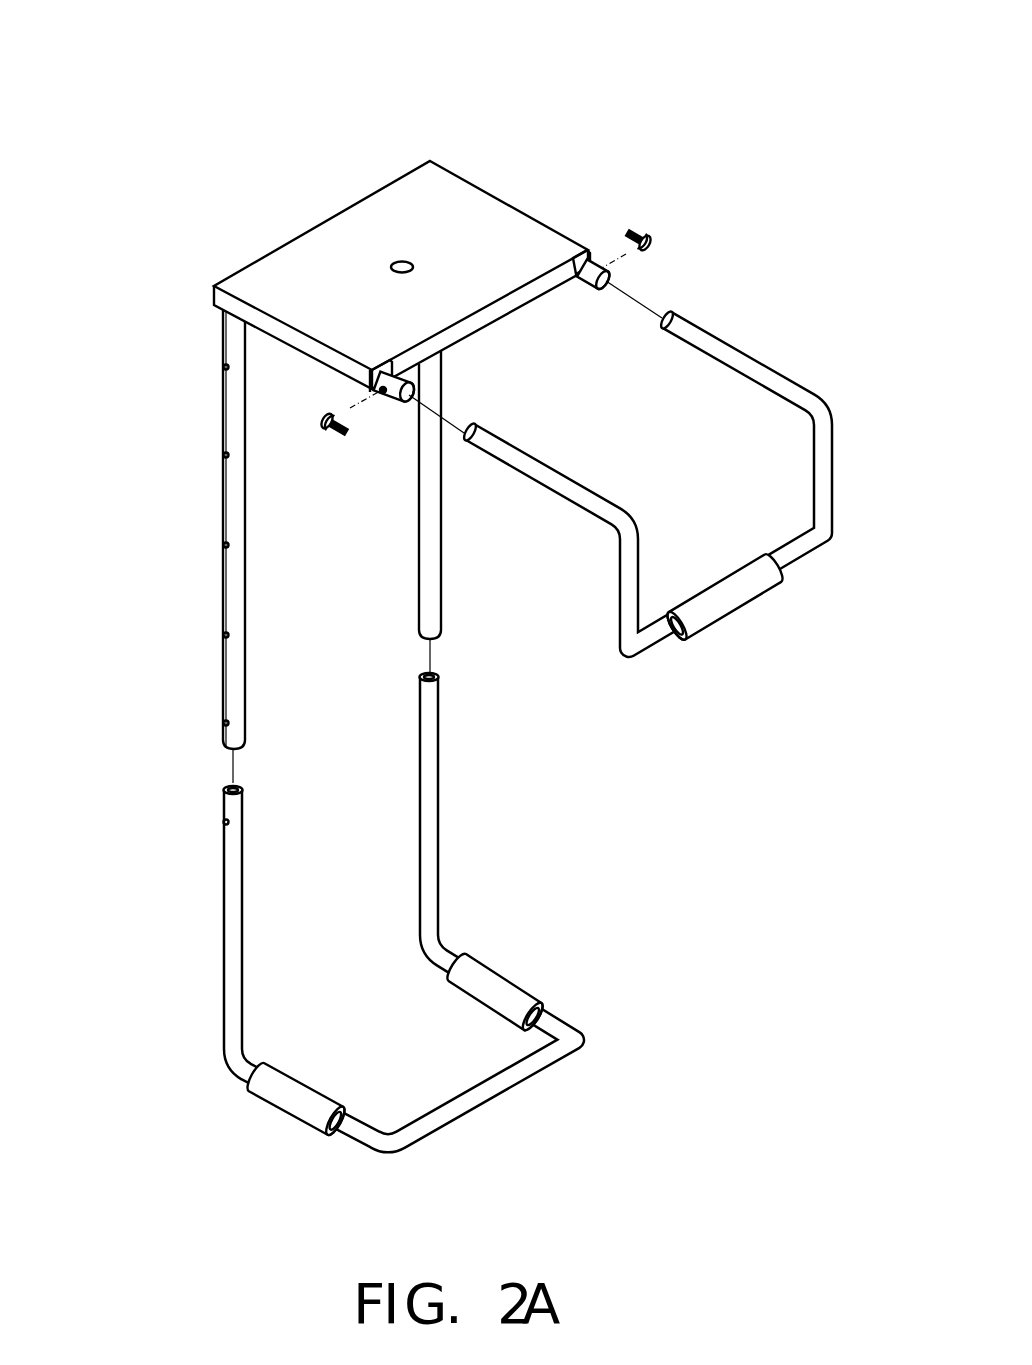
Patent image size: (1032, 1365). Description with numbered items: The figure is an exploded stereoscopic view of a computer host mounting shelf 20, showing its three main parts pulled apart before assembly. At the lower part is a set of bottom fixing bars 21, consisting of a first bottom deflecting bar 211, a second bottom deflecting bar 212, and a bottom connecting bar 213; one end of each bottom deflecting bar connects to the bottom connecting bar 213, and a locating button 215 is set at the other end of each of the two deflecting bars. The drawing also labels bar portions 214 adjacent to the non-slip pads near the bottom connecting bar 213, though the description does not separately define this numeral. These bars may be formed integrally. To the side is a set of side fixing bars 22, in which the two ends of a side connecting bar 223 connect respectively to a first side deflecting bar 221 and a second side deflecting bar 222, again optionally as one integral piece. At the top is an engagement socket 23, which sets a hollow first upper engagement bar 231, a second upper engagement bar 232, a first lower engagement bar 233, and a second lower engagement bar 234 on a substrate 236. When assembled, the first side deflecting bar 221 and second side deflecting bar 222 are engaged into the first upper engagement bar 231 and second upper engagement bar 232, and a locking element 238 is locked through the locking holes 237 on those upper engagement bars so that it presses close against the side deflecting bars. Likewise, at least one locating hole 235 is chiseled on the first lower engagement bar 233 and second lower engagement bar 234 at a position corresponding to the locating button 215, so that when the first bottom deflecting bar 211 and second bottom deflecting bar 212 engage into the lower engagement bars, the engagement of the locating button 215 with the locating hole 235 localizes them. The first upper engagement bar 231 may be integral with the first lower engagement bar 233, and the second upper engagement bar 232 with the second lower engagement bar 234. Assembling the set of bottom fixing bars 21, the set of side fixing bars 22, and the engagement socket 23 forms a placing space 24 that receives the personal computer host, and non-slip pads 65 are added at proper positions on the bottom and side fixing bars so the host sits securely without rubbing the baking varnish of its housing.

The computer host mounting shelf 20 is at (482, 80).
The set of bottom fixing bars 21 is at (183, 1025).
The set of side fixing bars 22 is at (870, 385).
The engagement socket 23 is at (288, 177).
The placing space 24 is at (353, 710).
The non-slip pad 65 is at (737, 603).
The first bottom deflecting bar 211 is at (228, 1053).
The second bottom deflecting bar 212 is at (458, 930).
The bottom connecting bar 213 is at (500, 1098).
The side bar 214 is at (558, 1022).
The locating button 215 is at (222, 824).
The first side deflecting bar 221 is at (592, 503).
The second side deflecting bar 222 is at (773, 362).
The side connecting bar 223 is at (655, 647).
The first upper engagement bar 231 is at (395, 400).
The second upper engagement bar 232 is at (610, 282).
The first lower engagement bar 233 is at (225, 405).
The second lower engagement bar 234 is at (438, 486).
The locating hole 235 is at (226, 724).
The substrate 236 is at (270, 268).
The locking hole 237 is at (378, 395).
The locking element 238 is at (320, 417).